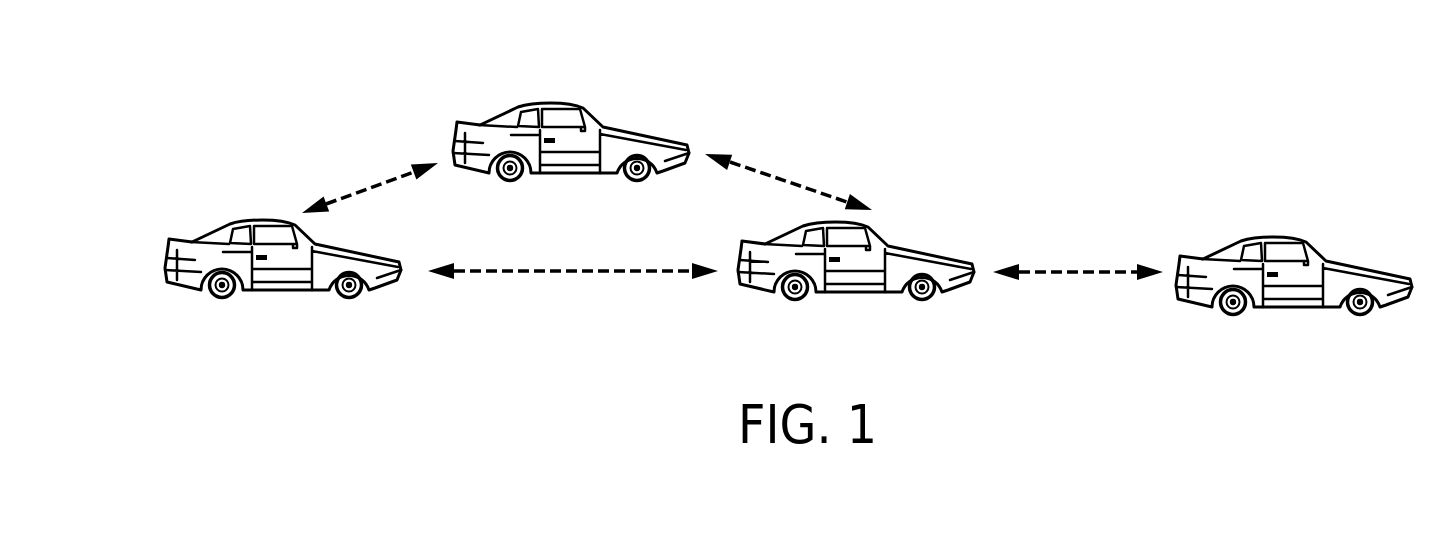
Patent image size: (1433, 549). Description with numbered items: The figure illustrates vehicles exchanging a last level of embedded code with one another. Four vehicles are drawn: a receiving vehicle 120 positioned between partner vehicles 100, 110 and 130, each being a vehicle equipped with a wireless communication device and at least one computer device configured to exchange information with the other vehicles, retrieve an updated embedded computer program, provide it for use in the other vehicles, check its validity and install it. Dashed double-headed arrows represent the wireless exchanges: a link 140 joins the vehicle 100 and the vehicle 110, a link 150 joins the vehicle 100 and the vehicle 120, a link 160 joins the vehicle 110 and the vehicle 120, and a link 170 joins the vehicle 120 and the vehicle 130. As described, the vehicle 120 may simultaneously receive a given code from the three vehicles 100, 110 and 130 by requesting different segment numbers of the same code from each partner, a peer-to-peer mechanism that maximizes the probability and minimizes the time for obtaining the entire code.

The vehicle 100 is at (222, 235).
The vehicle 110 is at (557, 105).
The vehicle 120 is at (832, 295).
The vehicle 130 is at (1288, 237).
The communication link between vehicles 100 and 110 140 is at (423, 163).
The communication link between vehicles 100 and 120 150 is at (583, 272).
The communication link between vehicles 110 and 120 160 is at (858, 207).
The communication link between vehicles 120 and 130 170 is at (1143, 268).